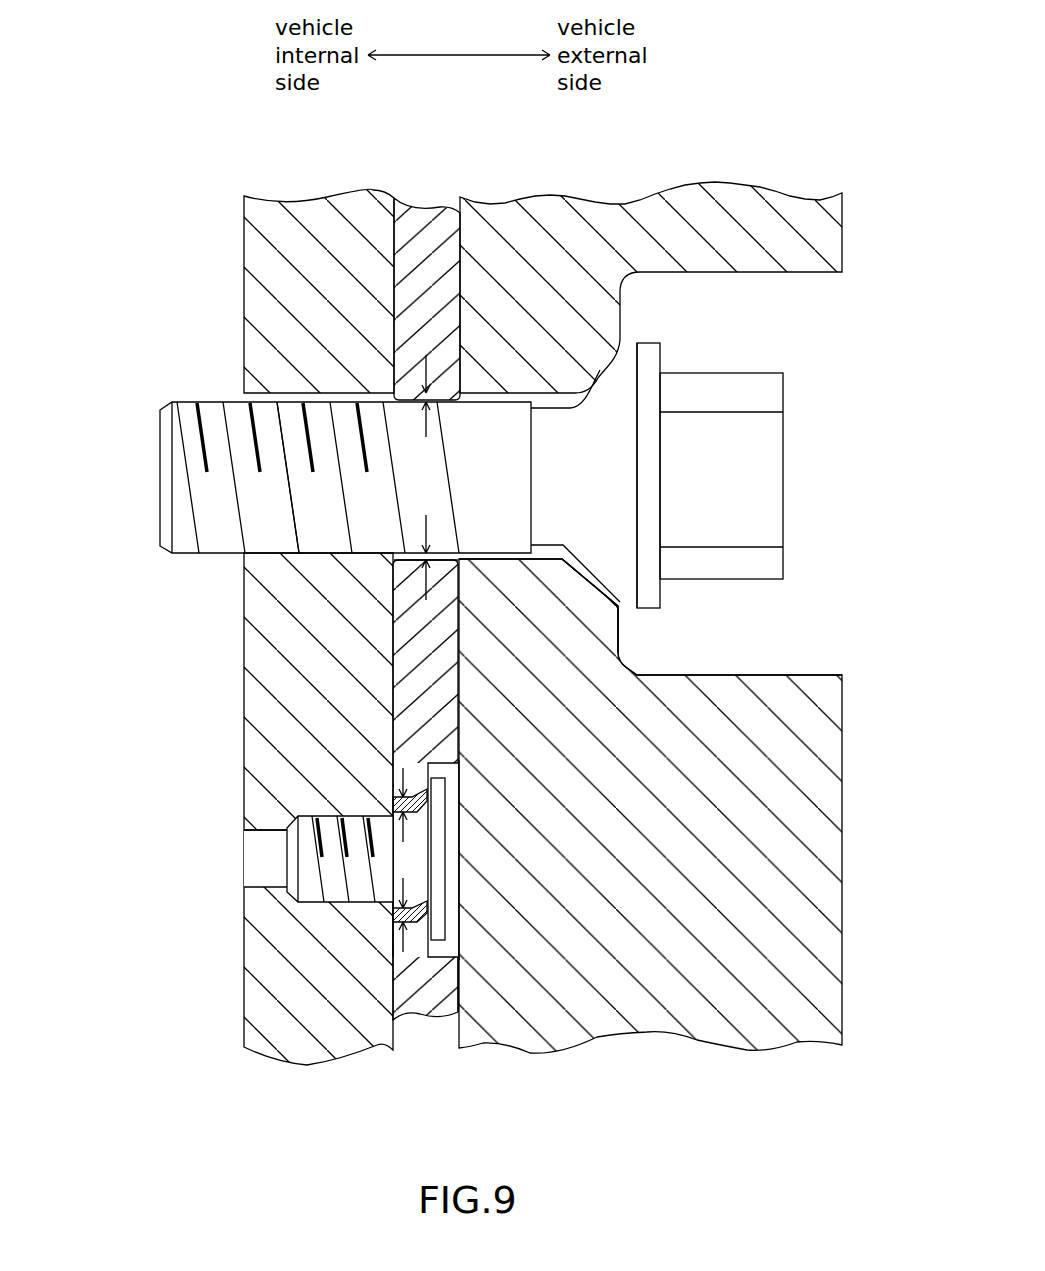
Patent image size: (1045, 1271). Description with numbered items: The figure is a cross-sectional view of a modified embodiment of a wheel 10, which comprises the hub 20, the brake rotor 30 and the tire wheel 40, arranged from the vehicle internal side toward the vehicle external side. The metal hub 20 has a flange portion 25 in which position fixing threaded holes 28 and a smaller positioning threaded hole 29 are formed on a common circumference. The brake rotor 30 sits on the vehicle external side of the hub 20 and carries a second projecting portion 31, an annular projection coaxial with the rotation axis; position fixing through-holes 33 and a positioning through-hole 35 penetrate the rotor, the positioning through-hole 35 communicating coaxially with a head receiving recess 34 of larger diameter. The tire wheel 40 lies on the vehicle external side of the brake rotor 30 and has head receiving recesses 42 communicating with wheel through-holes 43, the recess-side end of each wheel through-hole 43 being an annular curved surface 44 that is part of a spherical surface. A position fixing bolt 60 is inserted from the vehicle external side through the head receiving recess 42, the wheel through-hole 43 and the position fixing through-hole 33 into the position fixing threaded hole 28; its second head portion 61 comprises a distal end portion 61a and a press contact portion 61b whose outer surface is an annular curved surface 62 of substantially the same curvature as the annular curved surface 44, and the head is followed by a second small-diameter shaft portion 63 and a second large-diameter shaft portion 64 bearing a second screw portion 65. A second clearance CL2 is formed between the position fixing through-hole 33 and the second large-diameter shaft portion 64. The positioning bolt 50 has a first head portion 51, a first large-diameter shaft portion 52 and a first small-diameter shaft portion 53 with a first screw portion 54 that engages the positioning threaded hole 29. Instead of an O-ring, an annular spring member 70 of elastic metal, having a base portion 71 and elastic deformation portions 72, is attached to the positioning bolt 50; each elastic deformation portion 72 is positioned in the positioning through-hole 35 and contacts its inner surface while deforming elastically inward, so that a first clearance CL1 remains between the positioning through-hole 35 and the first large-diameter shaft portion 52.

The wheel 10 is at (662, 261).
The hub 20 is at (268, 291).
The flange portion 25 is at (250, 240).
The position fixing threaded hole 28 is at (267, 553).
The positioning threaded hole 29 is at (337, 887).
The brake rotor 30 is at (420, 652).
The second projecting portion 31 is at (423, 1013).
The position fixing through-hole 33 is at (410, 553).
The head receiving recess 34 is at (470, 945).
The positioning through-hole 35 is at (393, 905).
The tire wheel 40 is at (673, 1030).
The head receiving recess 42 is at (805, 272).
The wheel through-hole 43 is at (552, 559).
The annular curved surface 44 is at (618, 603).
The positioning bolt 50 is at (650, 619).
The first head portion 51 is at (590, 680).
The first large-diameter shaft portion 52 is at (462, 810).
The first small-diameter shaft portion 53 is at (259, 859).
The first screw portion 54 is at (300, 847).
The position fixing bolt 60 is at (532, 445).
The second head portion 61 is at (777, 476).
The distal end portion 61a is at (760, 480).
The press contact portion 61b is at (610, 523).
The annular curved surface 62 is at (622, 362).
The second small-diameter shaft portion 63 is at (560, 475).
The second large-diameter shaft portion 64 is at (183, 410).
The second screw portion 65 is at (290, 410).
The annular spring member 70 is at (294, 846).
The base portion 71 is at (428, 766).
The elastic deformation portion 72 is at (426, 792).
The first clearance CL1 is at (400, 793).
The second clearance CL2 is at (430, 380).